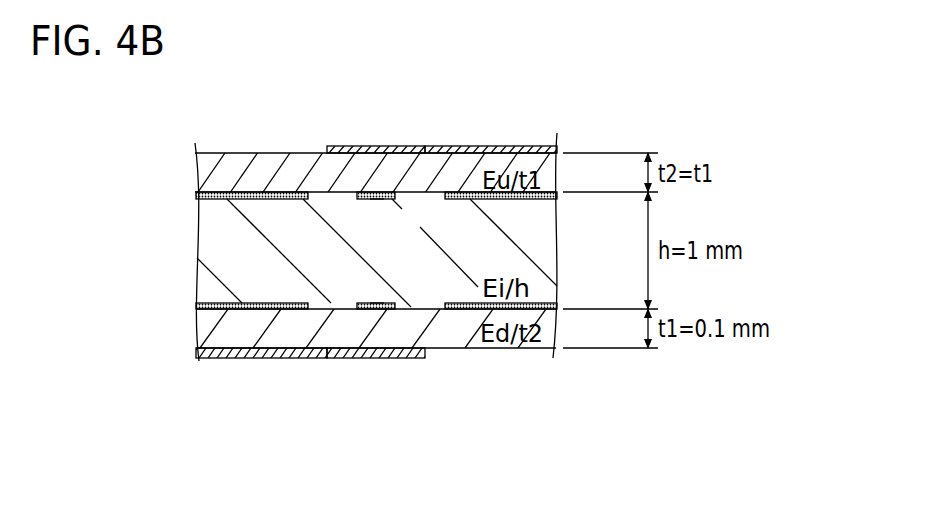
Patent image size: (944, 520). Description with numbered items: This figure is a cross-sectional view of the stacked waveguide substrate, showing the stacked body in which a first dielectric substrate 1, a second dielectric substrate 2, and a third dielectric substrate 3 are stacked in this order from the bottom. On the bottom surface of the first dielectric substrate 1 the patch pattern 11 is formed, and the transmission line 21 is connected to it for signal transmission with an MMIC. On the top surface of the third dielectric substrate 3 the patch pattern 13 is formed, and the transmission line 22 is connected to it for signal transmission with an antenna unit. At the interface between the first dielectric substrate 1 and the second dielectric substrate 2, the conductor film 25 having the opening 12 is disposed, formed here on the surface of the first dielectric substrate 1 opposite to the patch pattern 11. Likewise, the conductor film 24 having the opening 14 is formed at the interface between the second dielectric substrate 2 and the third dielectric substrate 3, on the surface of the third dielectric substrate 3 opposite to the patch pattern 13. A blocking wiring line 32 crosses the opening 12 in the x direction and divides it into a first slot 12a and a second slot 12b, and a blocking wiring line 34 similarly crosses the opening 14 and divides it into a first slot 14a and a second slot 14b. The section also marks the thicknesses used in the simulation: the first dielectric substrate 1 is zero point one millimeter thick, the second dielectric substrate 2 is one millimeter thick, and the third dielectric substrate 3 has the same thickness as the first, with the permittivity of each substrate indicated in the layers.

The first dielectric substrate 1 is at (206, 330).
The second dielectric substrate 2 is at (201, 247).
The third dielectric substrate 3 is at (211, 179).
The patch pattern 11 is at (337, 359).
The opening 12 is at (442, 381).
The first slot 12a is at (327, 309).
The second slot 12b is at (414, 309).
The patch pattern 13 is at (333, 146).
The opening 14 is at (442, 121).
The first slot 14a is at (327, 192).
The second slot 14b is at (412, 192).
The transmission line 21 is at (243, 359).
The transmission line 22 is at (505, 146).
The conductor film 24 is at (236, 198).
The conductor film 25 is at (236, 306).
The blocking wiring line 32 is at (378, 305).
The blocking wiring line 34 is at (381, 202).